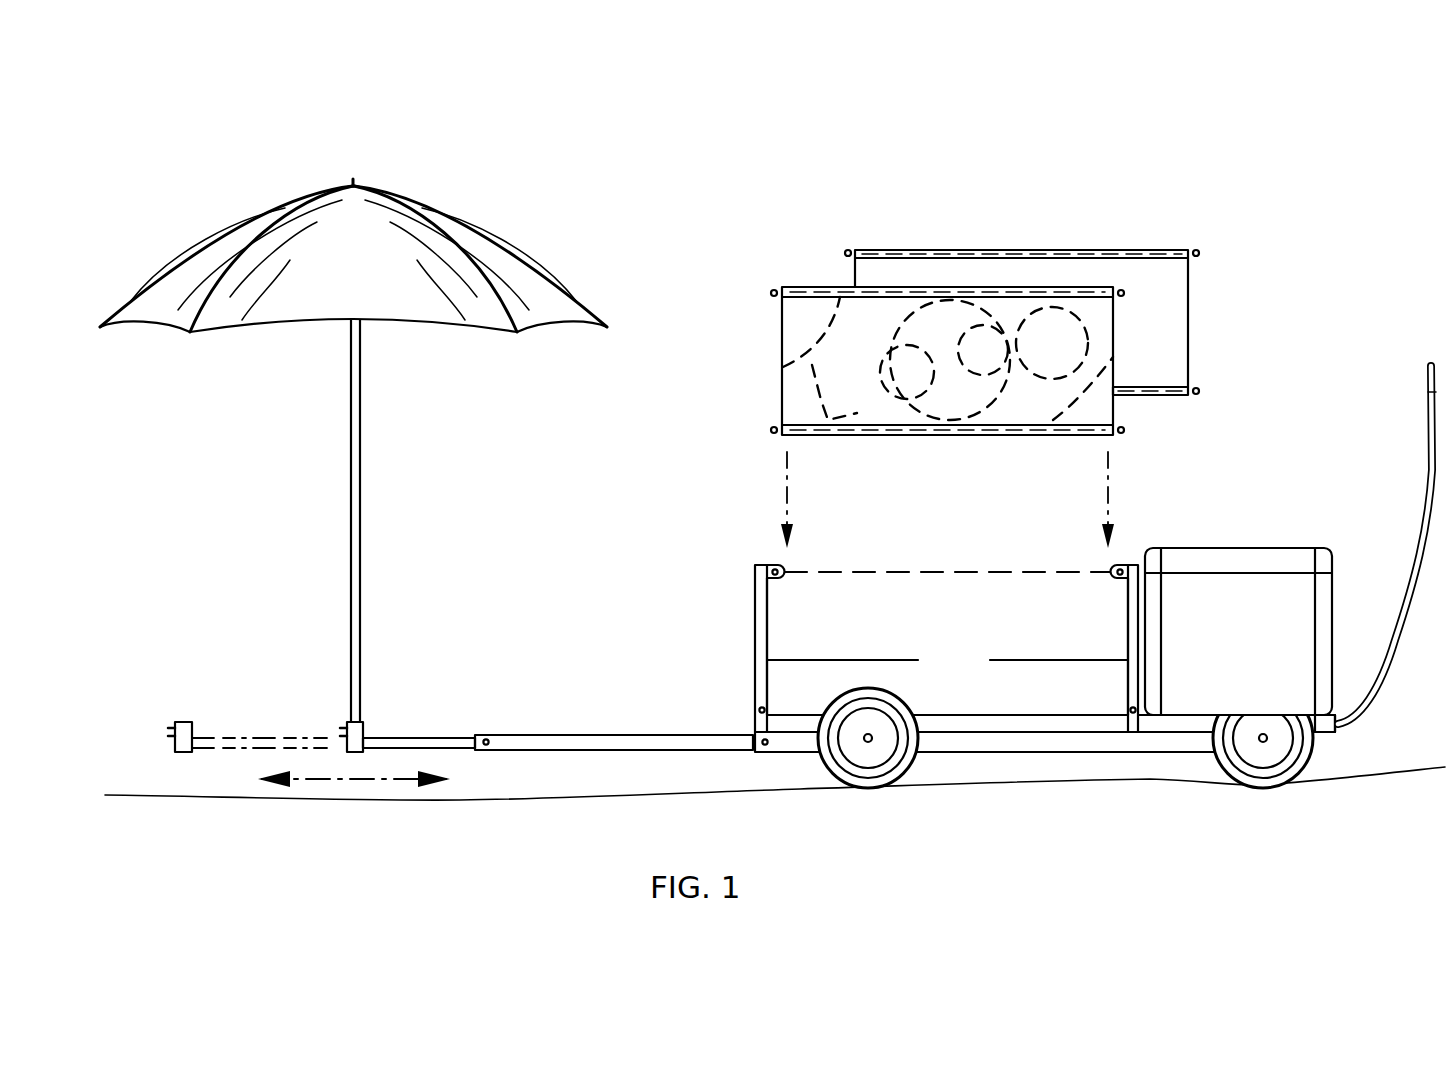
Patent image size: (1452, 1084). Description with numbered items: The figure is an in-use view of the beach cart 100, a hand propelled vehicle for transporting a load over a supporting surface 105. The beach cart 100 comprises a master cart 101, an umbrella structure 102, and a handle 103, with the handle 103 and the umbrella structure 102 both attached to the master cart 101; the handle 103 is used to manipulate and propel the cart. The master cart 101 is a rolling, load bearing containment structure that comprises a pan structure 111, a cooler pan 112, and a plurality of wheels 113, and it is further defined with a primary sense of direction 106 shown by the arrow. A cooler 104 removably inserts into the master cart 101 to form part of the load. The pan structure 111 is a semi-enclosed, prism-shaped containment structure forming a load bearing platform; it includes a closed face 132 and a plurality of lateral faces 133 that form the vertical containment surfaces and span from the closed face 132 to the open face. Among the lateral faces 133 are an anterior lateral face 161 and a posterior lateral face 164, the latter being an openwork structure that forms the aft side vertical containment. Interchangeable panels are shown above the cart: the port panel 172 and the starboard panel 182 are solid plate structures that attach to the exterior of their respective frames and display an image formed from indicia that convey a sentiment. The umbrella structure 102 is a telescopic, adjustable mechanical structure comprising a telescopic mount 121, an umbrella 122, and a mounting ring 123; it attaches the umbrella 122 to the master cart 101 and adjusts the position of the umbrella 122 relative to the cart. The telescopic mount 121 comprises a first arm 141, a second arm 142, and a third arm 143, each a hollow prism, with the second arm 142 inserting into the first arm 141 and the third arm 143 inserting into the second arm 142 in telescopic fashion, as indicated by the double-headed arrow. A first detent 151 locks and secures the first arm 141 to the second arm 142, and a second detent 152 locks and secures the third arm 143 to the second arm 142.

The beach cart 100 is at (236, 134).
The master cart 101 is at (1044, 798).
The umbrella structure 102 is at (558, 720).
The handle 103 is at (1433, 450).
The cooler 104 is at (1303, 603).
The supporting surface 105 is at (1377, 783).
The primary sense of direction 106 is at (1118, 197).
The pan structure 111 is at (889, 701).
The cooler pan 112 is at (1327, 732).
The plurality of wheels 113 is at (880, 773).
The telescopic mount 121 is at (647, 735).
The umbrella 122 is at (360, 452).
The mounting ring 123 is at (342, 724).
The closed face 132 is at (962, 713).
The plurality of lateral faces 133 is at (947, 664).
The first arm 141 is at (808, 753).
The second arm 142 is at (614, 743).
The third arm 143 is at (403, 730).
The first detent 151 is at (765, 746).
The second detent 152 is at (487, 738).
The anterior lateral face 161 is at (1128, 623).
The posterior lateral face 164 is at (768, 624).
The port panel 172 is at (1162, 310).
The starboard panel 182 is at (1100, 407).